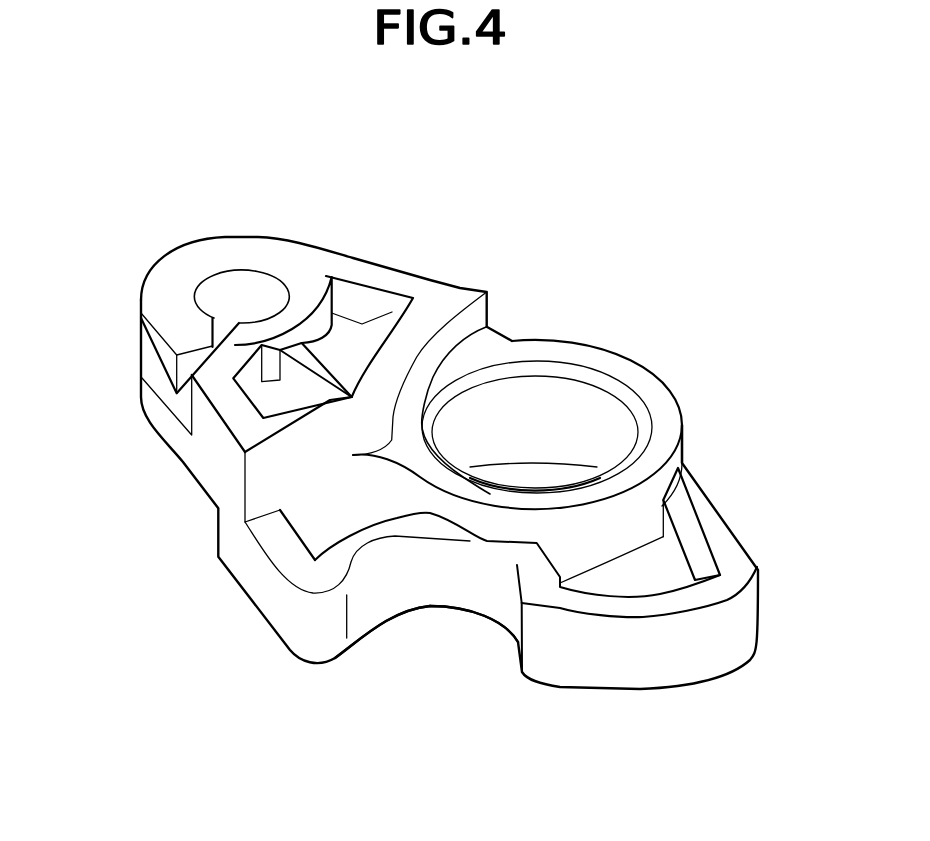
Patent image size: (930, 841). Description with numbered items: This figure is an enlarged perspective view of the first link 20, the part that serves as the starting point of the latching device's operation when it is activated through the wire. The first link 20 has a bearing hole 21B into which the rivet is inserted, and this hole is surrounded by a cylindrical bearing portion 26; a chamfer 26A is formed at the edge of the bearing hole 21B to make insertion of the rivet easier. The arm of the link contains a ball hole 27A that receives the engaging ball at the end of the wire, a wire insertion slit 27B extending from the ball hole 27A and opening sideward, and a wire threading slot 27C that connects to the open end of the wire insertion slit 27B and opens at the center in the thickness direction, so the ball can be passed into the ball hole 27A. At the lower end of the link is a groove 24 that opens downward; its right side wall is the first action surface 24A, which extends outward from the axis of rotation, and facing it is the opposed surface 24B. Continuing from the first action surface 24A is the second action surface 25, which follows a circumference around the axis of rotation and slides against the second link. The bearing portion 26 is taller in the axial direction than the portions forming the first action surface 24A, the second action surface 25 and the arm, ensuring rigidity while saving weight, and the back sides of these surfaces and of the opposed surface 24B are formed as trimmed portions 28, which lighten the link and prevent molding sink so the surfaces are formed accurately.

The first link 20 is at (612, 265).
The bearing hole 21B is at (563, 405).
The groove 24 is at (437, 667).
The first action surface 24A is at (517, 625).
The opposed surface 24B is at (356, 610).
The second action surface 25 is at (632, 653).
The bearing portion 26 is at (678, 382).
The chamfer 26A is at (607, 385).
The ball hole 27A is at (258, 295).
The wire insertion slit 27B is at (190, 356).
The wire threading slot 27C is at (158, 382).
The trimmed portions 28 is at (657, 570).